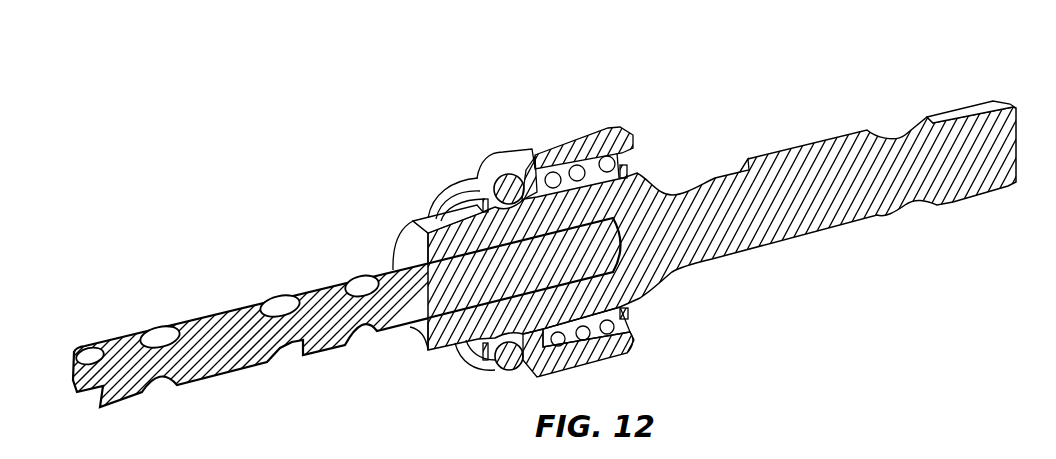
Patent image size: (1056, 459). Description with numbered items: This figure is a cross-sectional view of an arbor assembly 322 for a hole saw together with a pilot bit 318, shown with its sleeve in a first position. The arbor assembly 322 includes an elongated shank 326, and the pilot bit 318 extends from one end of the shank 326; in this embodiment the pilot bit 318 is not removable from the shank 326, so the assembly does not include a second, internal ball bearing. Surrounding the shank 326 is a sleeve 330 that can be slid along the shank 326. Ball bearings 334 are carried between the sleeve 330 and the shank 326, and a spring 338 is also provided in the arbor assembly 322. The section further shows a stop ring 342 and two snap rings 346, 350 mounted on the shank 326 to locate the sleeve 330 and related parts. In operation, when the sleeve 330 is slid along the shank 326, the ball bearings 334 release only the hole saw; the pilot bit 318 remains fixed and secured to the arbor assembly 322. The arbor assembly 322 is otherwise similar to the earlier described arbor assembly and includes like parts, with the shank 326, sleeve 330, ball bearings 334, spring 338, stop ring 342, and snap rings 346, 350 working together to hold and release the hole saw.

The pilot bit 318 is at (228, 306).
The arbor assembly 322 is at (390, 84).
The shank 326 is at (766, 161).
The sleeve 330 is at (578, 140).
The ball bearings 334 is at (510, 173).
The spring 338 is at (586, 338).
The stop ring 342 is at (637, 337).
The snap ring 346 is at (486, 357).
The snap ring 350 is at (629, 315).